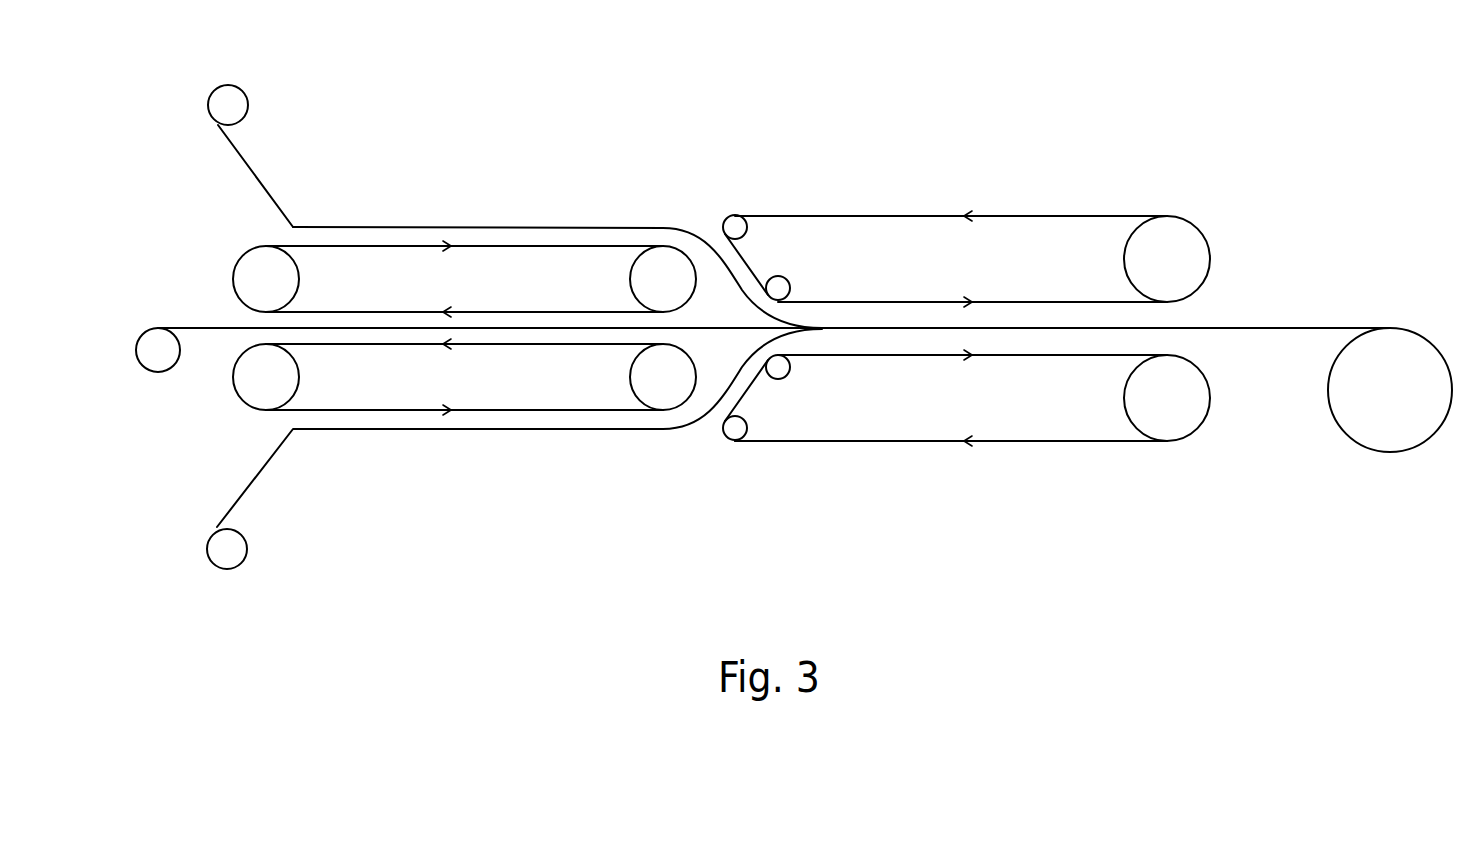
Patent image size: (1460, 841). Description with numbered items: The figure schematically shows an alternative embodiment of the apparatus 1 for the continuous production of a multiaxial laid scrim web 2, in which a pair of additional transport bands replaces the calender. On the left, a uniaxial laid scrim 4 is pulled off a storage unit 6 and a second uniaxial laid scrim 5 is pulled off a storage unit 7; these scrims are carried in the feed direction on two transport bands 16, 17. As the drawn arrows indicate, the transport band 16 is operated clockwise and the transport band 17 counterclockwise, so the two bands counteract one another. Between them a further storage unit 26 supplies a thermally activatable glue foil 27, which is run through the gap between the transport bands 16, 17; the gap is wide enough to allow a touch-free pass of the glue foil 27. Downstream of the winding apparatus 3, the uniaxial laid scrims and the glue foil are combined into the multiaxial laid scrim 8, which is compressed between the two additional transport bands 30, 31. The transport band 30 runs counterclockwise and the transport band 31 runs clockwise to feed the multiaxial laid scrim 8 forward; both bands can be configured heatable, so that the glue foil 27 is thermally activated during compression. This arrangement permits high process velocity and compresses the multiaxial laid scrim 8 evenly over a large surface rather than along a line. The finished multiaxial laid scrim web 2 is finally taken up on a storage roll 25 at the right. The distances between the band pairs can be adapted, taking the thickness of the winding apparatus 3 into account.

The apparatus 1 is at (777, 478).
The multiaxial laid scrim web 2 is at (1280, 327).
The winding apparatus 3 is at (480, 226).
The uniaxial laid scrim 4 is at (260, 178).
The uniaxial laid scrim 5 is at (259, 477).
The storage unit 6 is at (235, 97).
The storage unit 7 is at (226, 555).
The multiaxial laid scrim 8 is at (760, 315).
The transport band 16 is at (568, 245).
The transport band 17 is at (565, 412).
The storage roll 25 is at (1380, 437).
The storage unit 26 is at (161, 362).
The glue foil 27 is at (185, 327).
The transport band 30 is at (1050, 215).
The transport band 31 is at (1037, 443).